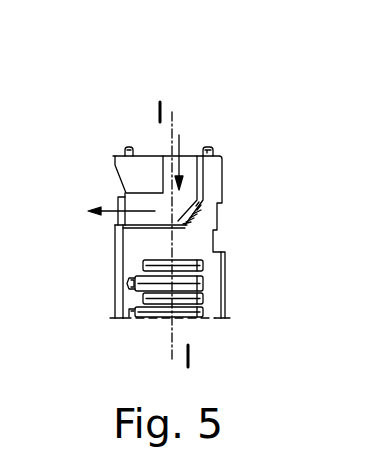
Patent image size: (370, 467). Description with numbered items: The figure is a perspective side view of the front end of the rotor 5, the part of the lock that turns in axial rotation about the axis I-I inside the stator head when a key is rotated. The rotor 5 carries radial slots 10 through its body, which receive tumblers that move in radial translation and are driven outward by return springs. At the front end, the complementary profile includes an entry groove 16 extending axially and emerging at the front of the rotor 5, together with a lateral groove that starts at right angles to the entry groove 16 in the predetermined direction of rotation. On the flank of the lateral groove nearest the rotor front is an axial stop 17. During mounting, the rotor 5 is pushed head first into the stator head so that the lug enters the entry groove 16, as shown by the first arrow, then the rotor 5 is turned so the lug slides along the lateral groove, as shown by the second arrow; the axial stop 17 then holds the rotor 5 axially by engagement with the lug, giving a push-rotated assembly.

The rotor 5 is at (143, 218).
The entry groove 16 is at (185, 155).
The axial stop 17 is at (124, 190).
The radial slots 10 is at (192, 300).